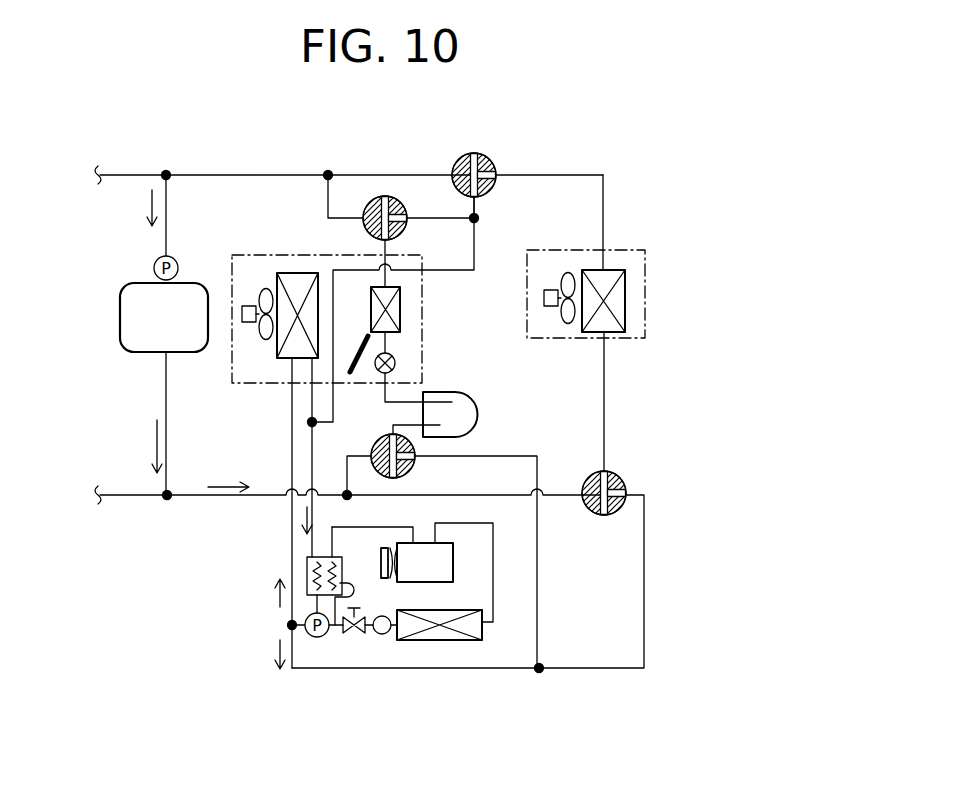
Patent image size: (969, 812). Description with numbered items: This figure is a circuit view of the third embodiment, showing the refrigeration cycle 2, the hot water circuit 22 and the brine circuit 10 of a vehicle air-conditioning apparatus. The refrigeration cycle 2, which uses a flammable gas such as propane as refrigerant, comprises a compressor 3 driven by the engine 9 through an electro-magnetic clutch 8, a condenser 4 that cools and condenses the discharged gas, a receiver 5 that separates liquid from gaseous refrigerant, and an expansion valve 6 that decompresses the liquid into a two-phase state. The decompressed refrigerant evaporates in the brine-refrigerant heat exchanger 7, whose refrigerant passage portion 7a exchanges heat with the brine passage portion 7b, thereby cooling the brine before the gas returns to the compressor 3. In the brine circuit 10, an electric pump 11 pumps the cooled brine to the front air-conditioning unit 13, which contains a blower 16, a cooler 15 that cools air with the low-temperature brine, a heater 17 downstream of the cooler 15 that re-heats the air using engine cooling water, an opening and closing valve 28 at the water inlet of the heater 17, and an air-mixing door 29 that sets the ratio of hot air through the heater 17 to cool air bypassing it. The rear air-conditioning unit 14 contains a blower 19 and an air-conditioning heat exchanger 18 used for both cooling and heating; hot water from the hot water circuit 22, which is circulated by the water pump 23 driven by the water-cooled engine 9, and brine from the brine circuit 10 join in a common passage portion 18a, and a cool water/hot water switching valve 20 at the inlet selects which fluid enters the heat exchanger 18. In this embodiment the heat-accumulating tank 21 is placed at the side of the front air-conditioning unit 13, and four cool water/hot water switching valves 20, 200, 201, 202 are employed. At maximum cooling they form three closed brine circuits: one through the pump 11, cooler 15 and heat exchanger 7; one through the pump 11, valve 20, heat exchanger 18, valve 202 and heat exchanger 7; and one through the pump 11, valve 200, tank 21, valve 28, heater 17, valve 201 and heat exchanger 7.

The hot water circuit 22 is at (118, 155).
The water pump 23 is at (168, 256).
The engine 9 is at (120, 316).
The common passage portion 18a is at (603, 202).
The cool water/hot water switching valve 201 is at (378, 197).
The cool water/hot water switching valve 202 is at (480, 152).
The front air-conditioning unit 13 is at (249, 255).
The blower 16 is at (262, 295).
The cooler 15 is at (293, 283).
The heater 17 is at (400, 298).
The air-mixing door 29 is at (366, 334).
The opening and closing valve 28 is at (387, 373).
The heat-accumulating tank 21 is at (477, 410).
The cool water/hot water switching valve 200 is at (410, 447).
The rear air-conditioning unit 14 is at (645, 258).
The blower 19 is at (568, 275).
The air-conditioning heat exchanger 18 is at (625, 300).
The cool water/hot water switching valve 20 is at (628, 475).
The brine circuit 10 is at (272, 521).
The brine-refrigerant heat exchanger 7 is at (307, 563).
The refrigerant passage portion 7a is at (313, 600).
The brine passage portion 7b is at (310, 577).
The compressor 3 is at (453, 560).
The electro-magnetic clutch 8 is at (380, 553).
The refrigeration cycle 2 is at (506, 624).
The electric pump 11 is at (315, 638).
The expansion valve 6 is at (346, 632).
The receiver 5 is at (381, 635).
The condenser 4 is at (436, 640).